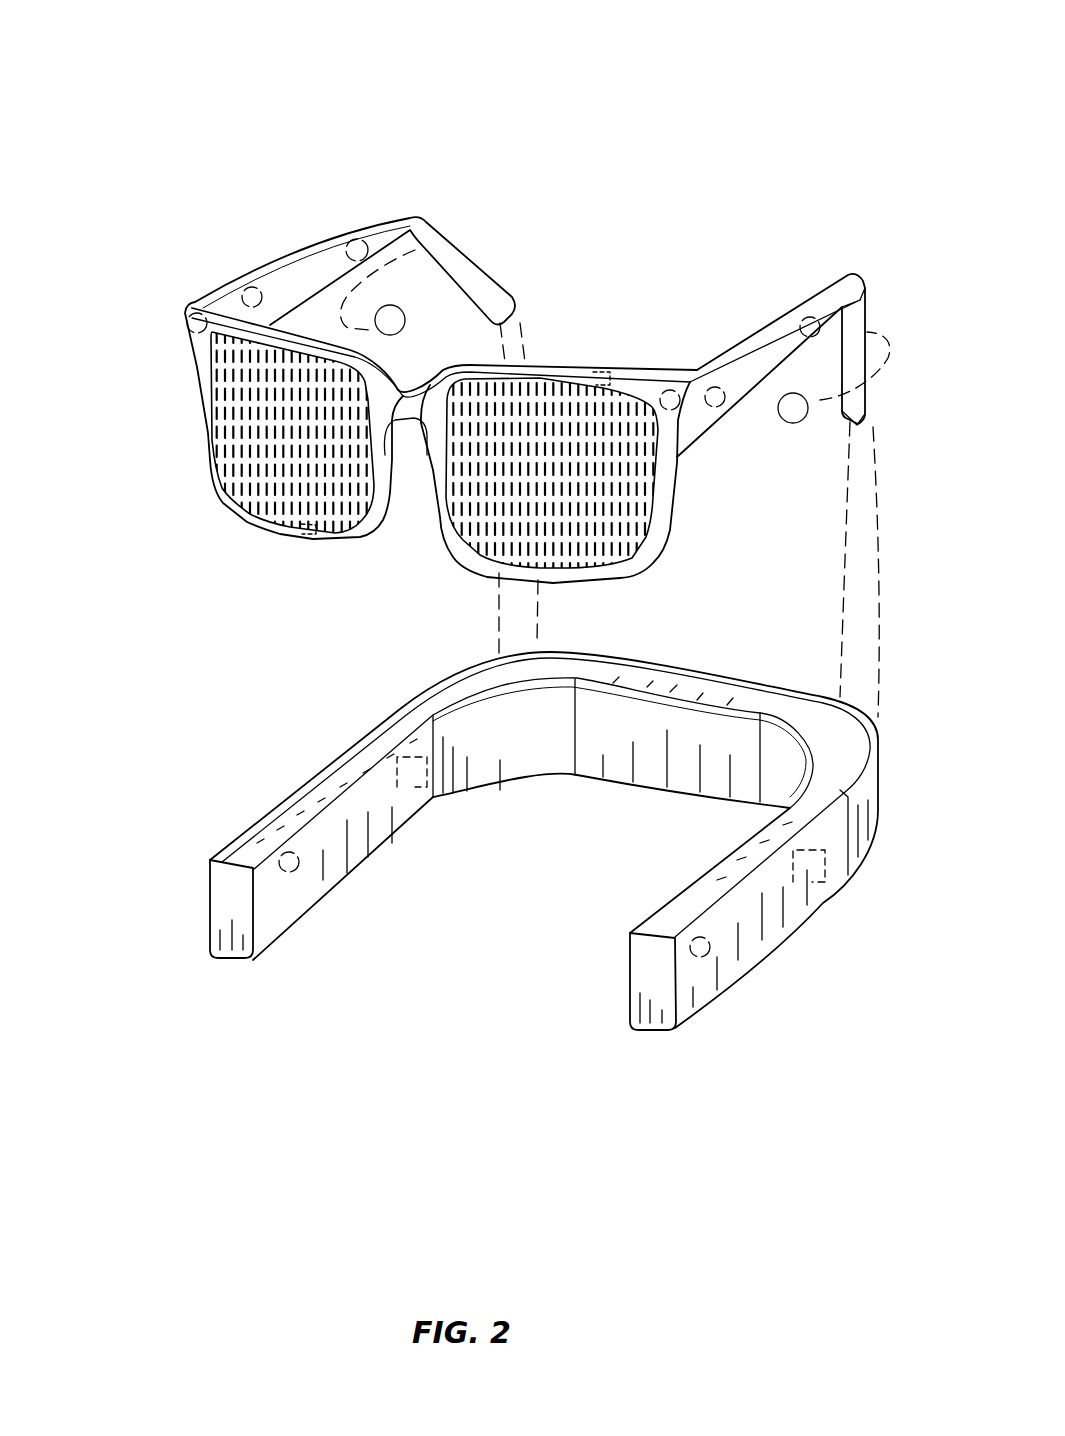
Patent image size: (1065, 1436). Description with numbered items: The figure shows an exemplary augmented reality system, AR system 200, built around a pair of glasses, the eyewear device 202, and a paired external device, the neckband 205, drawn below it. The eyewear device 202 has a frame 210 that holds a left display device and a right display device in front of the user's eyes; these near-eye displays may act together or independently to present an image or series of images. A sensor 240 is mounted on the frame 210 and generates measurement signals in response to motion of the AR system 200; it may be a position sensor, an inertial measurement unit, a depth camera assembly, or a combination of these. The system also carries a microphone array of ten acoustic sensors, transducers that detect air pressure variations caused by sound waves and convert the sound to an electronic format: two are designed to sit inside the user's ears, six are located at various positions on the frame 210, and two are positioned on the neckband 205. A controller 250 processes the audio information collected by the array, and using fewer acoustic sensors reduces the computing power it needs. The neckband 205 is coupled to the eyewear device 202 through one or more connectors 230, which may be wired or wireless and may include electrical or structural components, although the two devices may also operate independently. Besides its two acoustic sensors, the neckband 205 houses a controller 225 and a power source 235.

The AR system 200 is at (113, 113).
The eyewear device 202 is at (305, 539).
The neckband 205 is at (208, 960).
The frame 210 is at (404, 229).
The controller 225 is at (803, 876).
The connector 230 is at (878, 596).
The power source 235 is at (410, 778).
The sensor 240 is at (303, 530).
The controller 250 is at (600, 371).